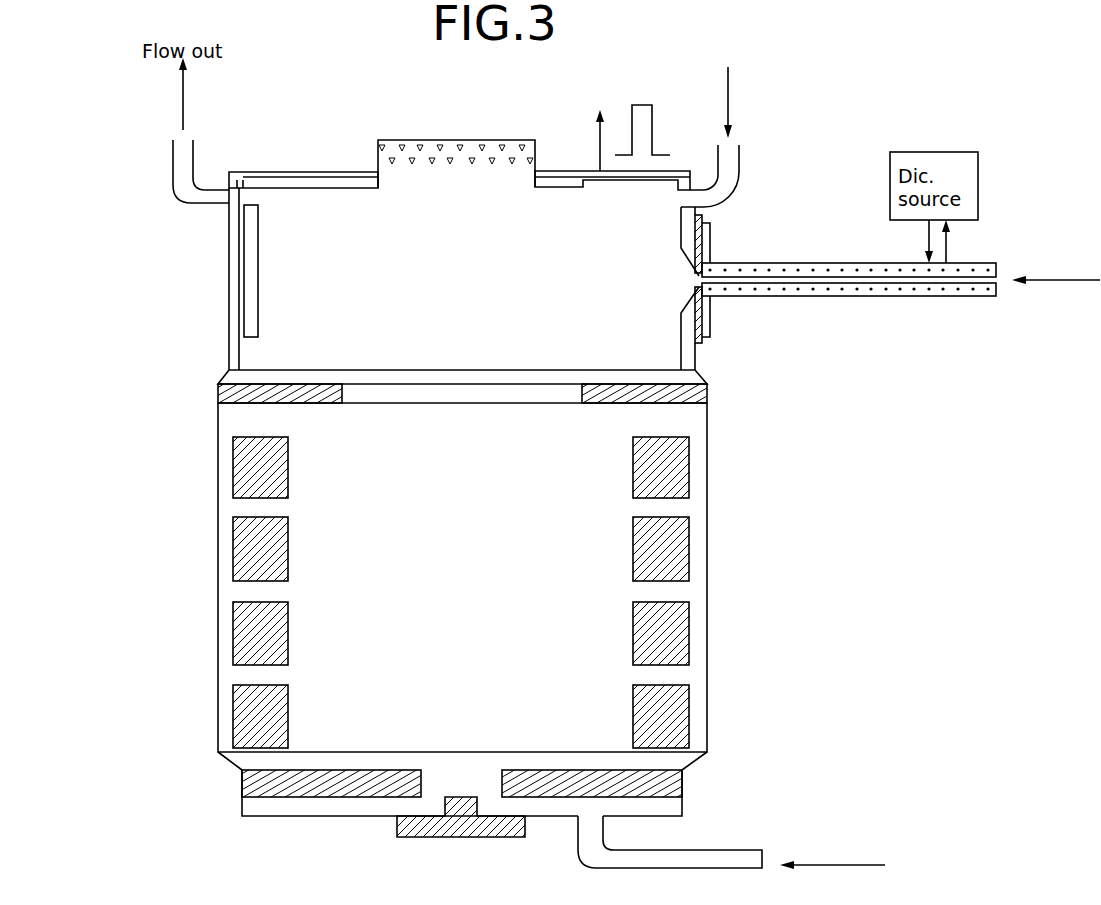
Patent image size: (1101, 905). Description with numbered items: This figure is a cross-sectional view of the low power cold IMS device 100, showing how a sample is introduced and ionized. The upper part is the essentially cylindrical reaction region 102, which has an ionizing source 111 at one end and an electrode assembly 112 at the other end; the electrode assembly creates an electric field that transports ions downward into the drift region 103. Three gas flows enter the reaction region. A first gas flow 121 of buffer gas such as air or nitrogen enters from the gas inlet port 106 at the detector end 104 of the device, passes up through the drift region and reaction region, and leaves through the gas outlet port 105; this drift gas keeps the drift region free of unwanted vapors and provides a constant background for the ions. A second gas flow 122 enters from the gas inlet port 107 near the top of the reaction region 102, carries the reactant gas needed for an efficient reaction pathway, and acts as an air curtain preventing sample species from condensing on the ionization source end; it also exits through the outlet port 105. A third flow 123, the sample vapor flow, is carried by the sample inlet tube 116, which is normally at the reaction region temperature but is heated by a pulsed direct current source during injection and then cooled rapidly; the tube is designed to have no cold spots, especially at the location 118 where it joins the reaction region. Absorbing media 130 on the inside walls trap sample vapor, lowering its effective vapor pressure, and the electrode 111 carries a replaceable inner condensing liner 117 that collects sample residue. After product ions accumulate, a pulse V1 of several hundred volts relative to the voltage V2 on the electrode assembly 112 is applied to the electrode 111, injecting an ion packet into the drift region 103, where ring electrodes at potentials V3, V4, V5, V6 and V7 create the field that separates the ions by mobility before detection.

The cold IMS device 100 is at (388, 111).
The reaction region 102 is at (421, 302).
The drift region 103 is at (476, 541).
The detector end 104 is at (410, 828).
The gas outlet port 105 is at (193, 163).
The gas inlet port 106 is at (717, 850).
The gas inlet port 107 is at (739, 168).
The ionizing source 111 is at (495, 164).
The electrode assembly 112 is at (725, 393).
The sample inlet tube 116 is at (763, 243).
The inner condensing liner 117 is at (293, 196).
The location where inlet tube joins reaction region 118 is at (703, 313).
The first gas flow 121 is at (870, 865).
The second gas flow 122 is at (728, 100).
The third flow 123 is at (1077, 282).
The absorbing media 130 is at (567, 188).
The pulse V1 is at (600, 129).
The voltage on electrode 112 V2 is at (240, 395).
The ring electrode potential V3 is at (257, 470).
The ring electrode potential V4 is at (257, 553).
The ring electrode potential V5 is at (252, 647).
The ring electrode potential V6 is at (253, 718).
The ring electrode potential V7 is at (263, 785).